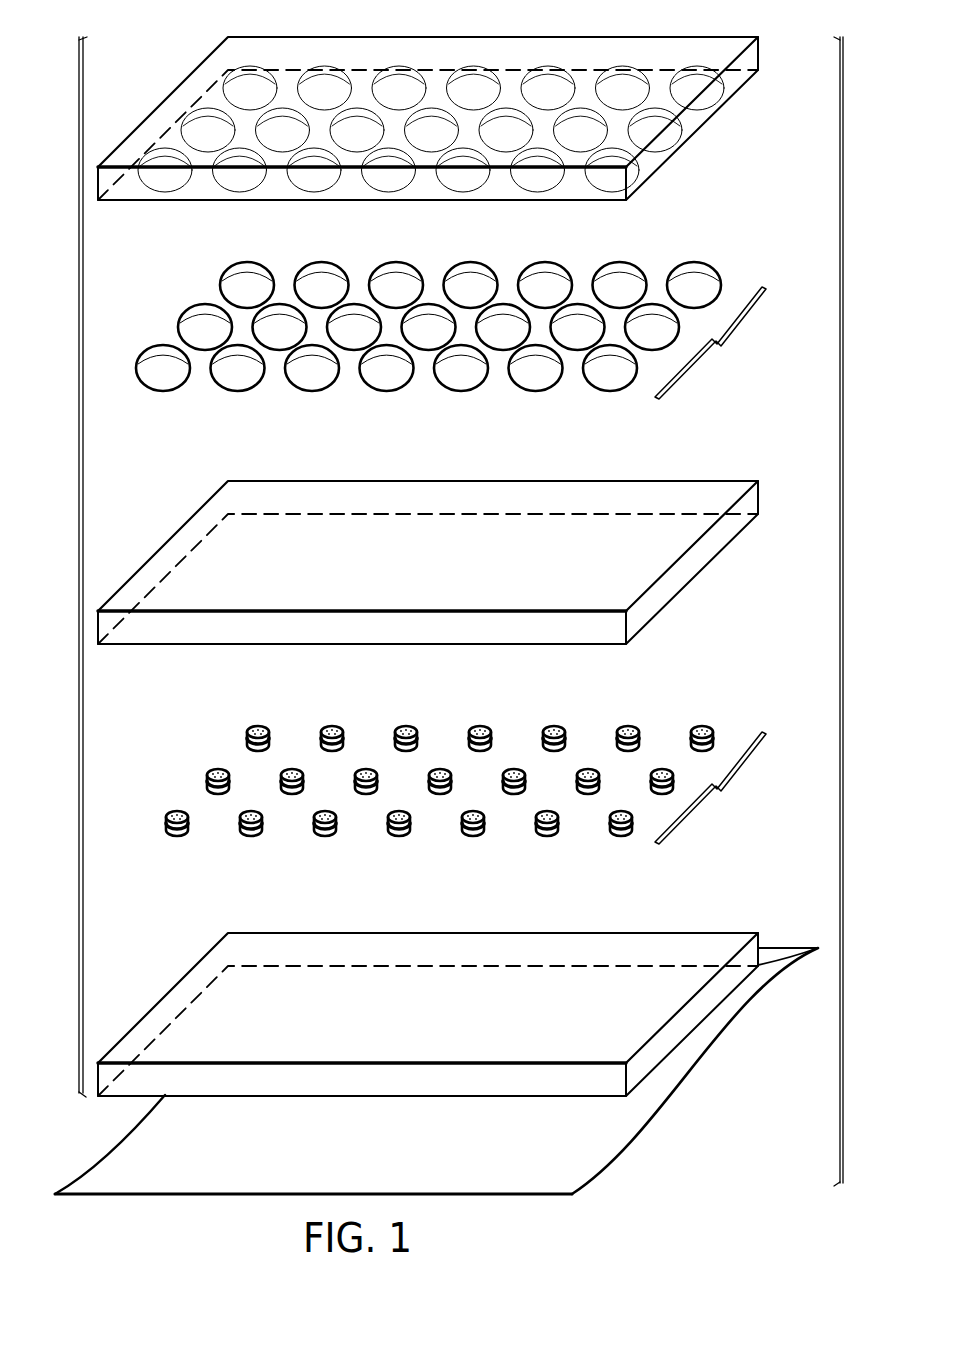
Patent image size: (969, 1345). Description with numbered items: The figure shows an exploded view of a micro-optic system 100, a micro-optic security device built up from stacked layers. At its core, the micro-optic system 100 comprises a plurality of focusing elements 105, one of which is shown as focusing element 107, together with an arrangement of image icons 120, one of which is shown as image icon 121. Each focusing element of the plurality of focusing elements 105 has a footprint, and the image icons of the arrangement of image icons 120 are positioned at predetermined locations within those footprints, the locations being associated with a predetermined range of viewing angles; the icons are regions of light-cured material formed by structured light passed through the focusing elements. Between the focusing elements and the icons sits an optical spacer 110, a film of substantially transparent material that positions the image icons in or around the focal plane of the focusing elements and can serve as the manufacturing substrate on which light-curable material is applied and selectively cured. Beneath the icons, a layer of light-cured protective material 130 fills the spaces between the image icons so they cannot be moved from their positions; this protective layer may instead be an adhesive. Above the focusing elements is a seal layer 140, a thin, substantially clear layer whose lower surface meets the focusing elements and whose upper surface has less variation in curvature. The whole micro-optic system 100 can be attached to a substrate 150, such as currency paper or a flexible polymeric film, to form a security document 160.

The micro-optic system 100 is at (79, 558).
The plurality of focusing elements 105 is at (442, 330).
The focusing element 107 is at (158, 347).
The optical spacer 110 is at (162, 542).
The arrangement of image icons 120 is at (446, 785).
The image icon 121 is at (170, 813).
The light-cured protective material 130 is at (160, 993).
The seal layer 140 is at (163, 100).
The substrate 150 is at (604, 1173).
The security document 160 is at (840, 605).